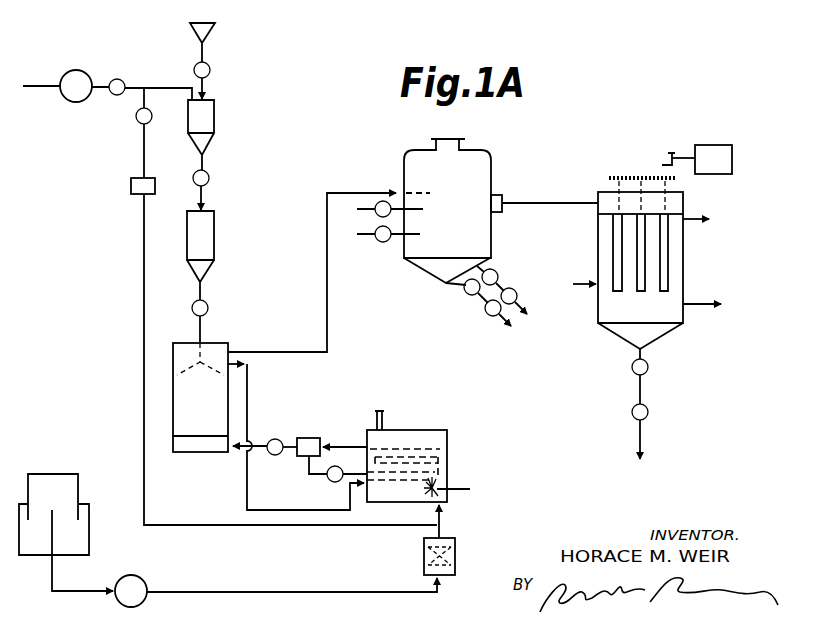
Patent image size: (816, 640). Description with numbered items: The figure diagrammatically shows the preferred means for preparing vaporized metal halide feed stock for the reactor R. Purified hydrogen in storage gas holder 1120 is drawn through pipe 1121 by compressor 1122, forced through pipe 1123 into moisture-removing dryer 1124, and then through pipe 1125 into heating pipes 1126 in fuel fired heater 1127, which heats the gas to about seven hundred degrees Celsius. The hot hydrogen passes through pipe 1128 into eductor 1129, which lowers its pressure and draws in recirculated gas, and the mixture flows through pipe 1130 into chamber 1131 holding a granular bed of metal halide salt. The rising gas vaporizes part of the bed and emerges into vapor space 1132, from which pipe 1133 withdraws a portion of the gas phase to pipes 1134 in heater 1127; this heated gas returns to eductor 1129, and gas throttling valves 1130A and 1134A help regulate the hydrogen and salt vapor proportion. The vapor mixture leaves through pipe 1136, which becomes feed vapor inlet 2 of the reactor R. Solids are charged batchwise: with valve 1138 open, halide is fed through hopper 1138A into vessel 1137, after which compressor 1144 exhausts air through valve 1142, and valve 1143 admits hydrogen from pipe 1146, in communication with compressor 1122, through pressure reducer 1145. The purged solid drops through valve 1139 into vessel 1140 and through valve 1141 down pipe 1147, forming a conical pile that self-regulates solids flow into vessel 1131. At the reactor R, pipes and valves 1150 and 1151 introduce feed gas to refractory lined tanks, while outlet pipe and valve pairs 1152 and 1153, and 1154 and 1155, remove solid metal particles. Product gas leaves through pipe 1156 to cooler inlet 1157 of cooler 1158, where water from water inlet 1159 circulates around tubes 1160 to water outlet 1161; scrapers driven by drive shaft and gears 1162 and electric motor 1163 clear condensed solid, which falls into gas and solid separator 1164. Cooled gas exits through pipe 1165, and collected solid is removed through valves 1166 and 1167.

The storage gas holder 1120 is at (55, 474).
The pipe 1121 is at (80, 598).
The compressor 1122 is at (143, 578).
The pipe 1123 is at (360, 595).
The dryer 1124 is at (456, 556).
The pipe 1125 is at (442, 519).
The heating pipes 1126 is at (437, 452).
The fuel fired heater 1127 is at (432, 430).
The pipe 1128 is at (338, 446).
The eductor 1129 is at (309, 438).
The pipe 1130 is at (238, 457).
The gas throttling valve 1130A is at (278, 439).
The chamber 1131 is at (218, 411).
The vapor space 1132 is at (217, 342).
The pipe 1133 is at (249, 379).
The pipes 1134 is at (390, 486).
The gas throttling valve 1134A is at (337, 481).
The pipe 1136 is at (272, 348).
The vessel 1137 is at (214, 118).
The valve 1138 is at (210, 67).
The hopper 1138A is at (210, 33).
The valve 1139 is at (208, 174).
The vessel 1140 is at (214, 230).
The valve 1141 is at (208, 304).
The valve 1142 is at (123, 81).
The valve 1143 is at (137, 121).
The compressor 1144 is at (76, 70).
The pressure reducer 1145 is at (131, 188).
The pipe 1146 is at (163, 520).
The pipe 1147 is at (198, 328).
The pipes and valves 1150 is at (382, 201).
The pipes and valves 1151 is at (378, 243).
The outlet pipe and valve 1152 is at (495, 270).
The outlet pipe and valve 1153 is at (516, 294).
The outlet pipe and valve 1154 is at (465, 289).
The outlet pipe and valve 1155 is at (488, 313).
The pipe 1156 is at (500, 190).
The cooler inlet 1157 is at (597, 203).
The cooler 1158 is at (598, 241).
The water inlet 1159 is at (587, 287).
The tubes 1160 is at (665, 243).
The water outlet 1161 is at (690, 215).
The drive shaft and drive gears 1162 is at (660, 175).
The electric motor 1163 is at (717, 145).
The gas and solid separator 1164 is at (620, 338).
The pipe 1165 is at (702, 309).
The valve 1166 is at (650, 368).
The valve 1167 is at (650, 414).
The feed vapor inlet 2 is at (352, 192).
The reactor R is at (481, 150).